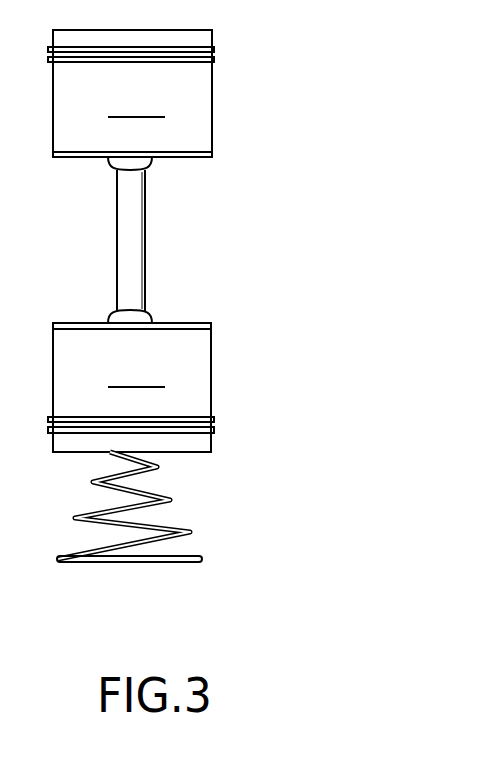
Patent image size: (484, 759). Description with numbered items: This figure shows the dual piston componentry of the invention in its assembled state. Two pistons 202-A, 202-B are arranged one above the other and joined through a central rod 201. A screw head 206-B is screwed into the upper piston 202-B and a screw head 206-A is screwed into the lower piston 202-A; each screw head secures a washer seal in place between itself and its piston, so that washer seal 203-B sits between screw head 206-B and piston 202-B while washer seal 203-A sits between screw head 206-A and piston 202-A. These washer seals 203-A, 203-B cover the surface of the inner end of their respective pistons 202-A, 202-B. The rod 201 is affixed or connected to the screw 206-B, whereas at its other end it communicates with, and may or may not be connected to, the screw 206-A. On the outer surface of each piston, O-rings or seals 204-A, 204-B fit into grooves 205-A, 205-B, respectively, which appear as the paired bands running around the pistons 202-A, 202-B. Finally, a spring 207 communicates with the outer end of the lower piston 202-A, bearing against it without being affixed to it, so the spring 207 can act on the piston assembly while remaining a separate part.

The rod 201 is at (120, 238).
The piston 202-A is at (233, 385).
The piston 202-B is at (233, 95).
The washer seal 203-A is at (208, 326).
The washer seal 203-B is at (210, 157).
The O-ring or seal 204-A is at (233, 419).
The groove 205-A is at (131, 430).
The O-ring or seal 204-B is at (233, 48).
The groove 205-B is at (131, 59).
The screw head 206-A is at (151, 319).
The screw head 206-B is at (150, 163).
The spring 207 is at (175, 497).